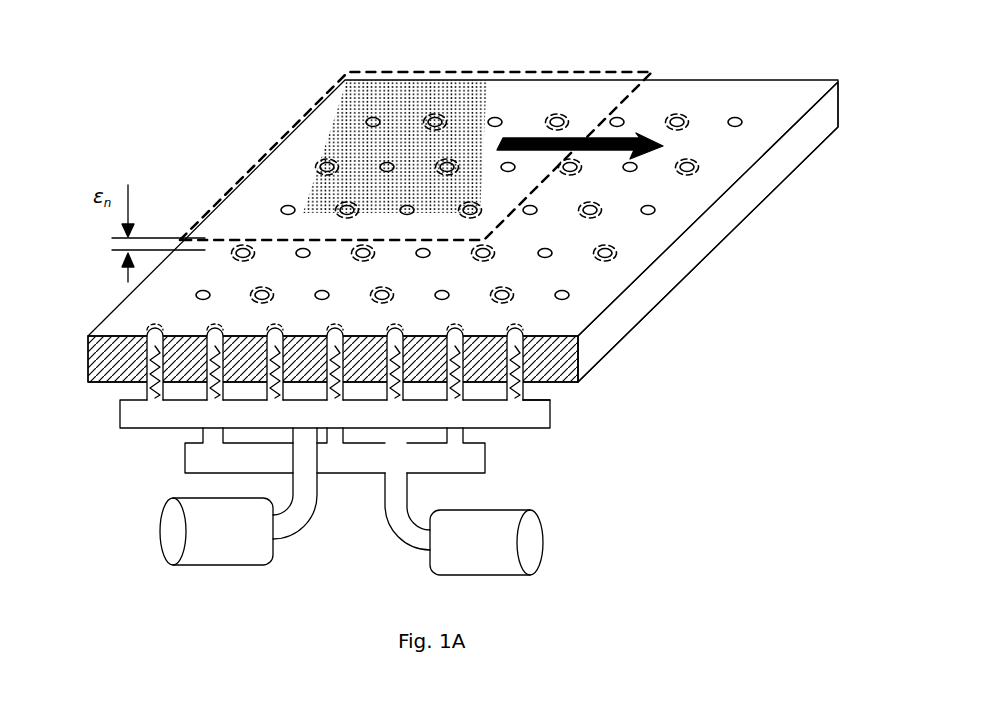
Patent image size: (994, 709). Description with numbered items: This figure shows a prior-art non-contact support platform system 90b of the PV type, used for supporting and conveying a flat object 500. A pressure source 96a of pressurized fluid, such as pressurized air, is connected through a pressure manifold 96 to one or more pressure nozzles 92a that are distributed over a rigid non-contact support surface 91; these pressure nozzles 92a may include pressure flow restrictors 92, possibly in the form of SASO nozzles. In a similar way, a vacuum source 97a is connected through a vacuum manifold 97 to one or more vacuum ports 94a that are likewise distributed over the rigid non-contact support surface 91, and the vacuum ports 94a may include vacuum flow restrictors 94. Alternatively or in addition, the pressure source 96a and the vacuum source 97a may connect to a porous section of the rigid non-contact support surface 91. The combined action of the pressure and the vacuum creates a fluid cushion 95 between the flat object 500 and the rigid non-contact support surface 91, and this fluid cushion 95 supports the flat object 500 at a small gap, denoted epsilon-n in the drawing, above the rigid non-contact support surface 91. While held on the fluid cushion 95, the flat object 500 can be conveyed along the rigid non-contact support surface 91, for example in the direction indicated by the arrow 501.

The non-contact support platform system 90b is at (697, 297).
The rigid non-contact support surface 91 is at (767, 118).
The pressure flow restrictors 92 is at (532, 381).
The pressure nozzles 92a is at (242, 250).
The vacuum flow restrictors 94 is at (205, 348).
The vacuum ports 94a is at (617, 118).
The fluid cushion 95 is at (392, 138).
The pressure manifold 96 is at (155, 412).
The pressure source 96a is at (175, 527).
The vacuum manifold 97 is at (447, 457).
The vacuum source 97a is at (535, 542).
The flat object 500 is at (317, 105).
The direction of conveyance 501 is at (600, 155).